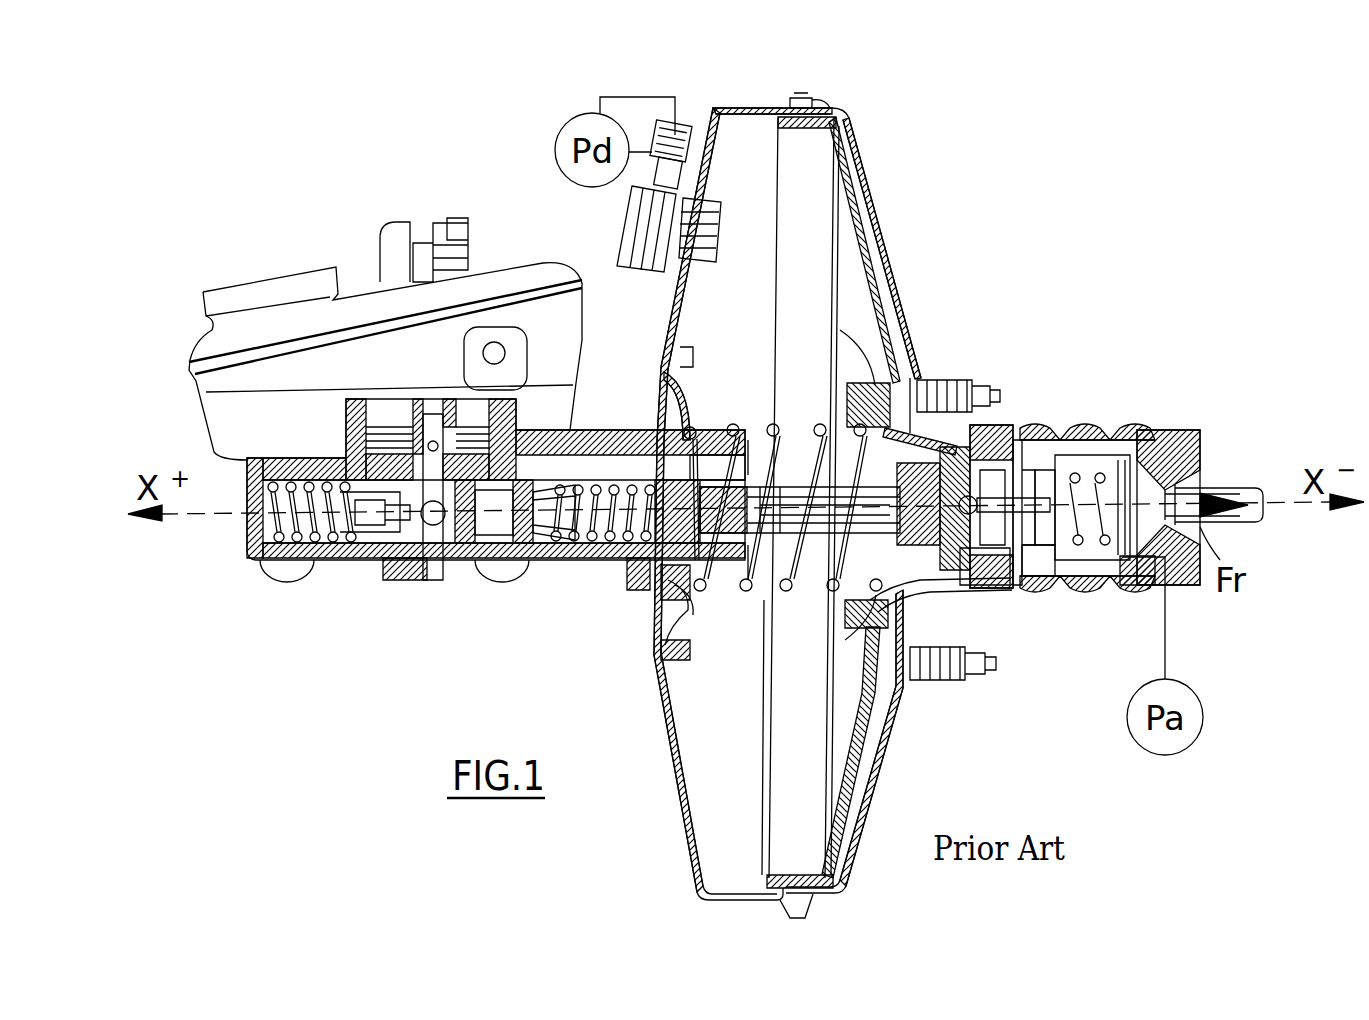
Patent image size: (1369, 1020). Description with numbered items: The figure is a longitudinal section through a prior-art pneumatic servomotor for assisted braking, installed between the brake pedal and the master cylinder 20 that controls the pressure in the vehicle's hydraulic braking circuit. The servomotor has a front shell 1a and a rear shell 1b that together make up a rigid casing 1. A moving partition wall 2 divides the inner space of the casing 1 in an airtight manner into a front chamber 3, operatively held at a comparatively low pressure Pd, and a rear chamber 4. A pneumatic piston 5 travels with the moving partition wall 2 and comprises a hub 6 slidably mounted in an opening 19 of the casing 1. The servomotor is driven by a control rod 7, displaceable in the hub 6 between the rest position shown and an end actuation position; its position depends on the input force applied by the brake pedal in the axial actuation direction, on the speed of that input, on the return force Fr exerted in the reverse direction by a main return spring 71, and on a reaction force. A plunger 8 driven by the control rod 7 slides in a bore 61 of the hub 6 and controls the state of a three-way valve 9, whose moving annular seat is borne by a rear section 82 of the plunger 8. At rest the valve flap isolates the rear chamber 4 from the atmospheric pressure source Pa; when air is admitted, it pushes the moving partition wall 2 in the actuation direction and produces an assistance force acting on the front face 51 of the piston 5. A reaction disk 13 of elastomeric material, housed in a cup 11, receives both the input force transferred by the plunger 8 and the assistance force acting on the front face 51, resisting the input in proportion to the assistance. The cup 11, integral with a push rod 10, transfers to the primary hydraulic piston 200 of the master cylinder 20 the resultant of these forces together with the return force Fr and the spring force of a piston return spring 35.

The rigid casing 1 is at (880, 188).
The front shell 1a is at (655, 339).
The rear shell 1b is at (892, 253).
The moving partition wall 2 is at (893, 217).
The front chamber 3 is at (720, 281).
The rear chamber 4 is at (880, 163).
The pneumatic piston 5 is at (930, 592).
The hub 6 is at (1122, 588).
The control rod 7 is at (1222, 493).
The plunger 8 is at (1017, 395).
The three-way valve 9 is at (1122, 393).
The push rod 10 is at (805, 490).
The cup 11 is at (940, 400).
The reaction disk 13 is at (878, 345).
The opening 19 is at (1068, 393).
The master cylinder 20 is at (463, 563).
The piston return spring 35 is at (797, 595).
The front face 51 is at (996, 592).
The bore 61 is at (1010, 393).
The main return spring 71 is at (1142, 430).
The rear section of the plunger 82 is at (1020, 590).
The primary hydraulic piston 200 is at (757, 592).